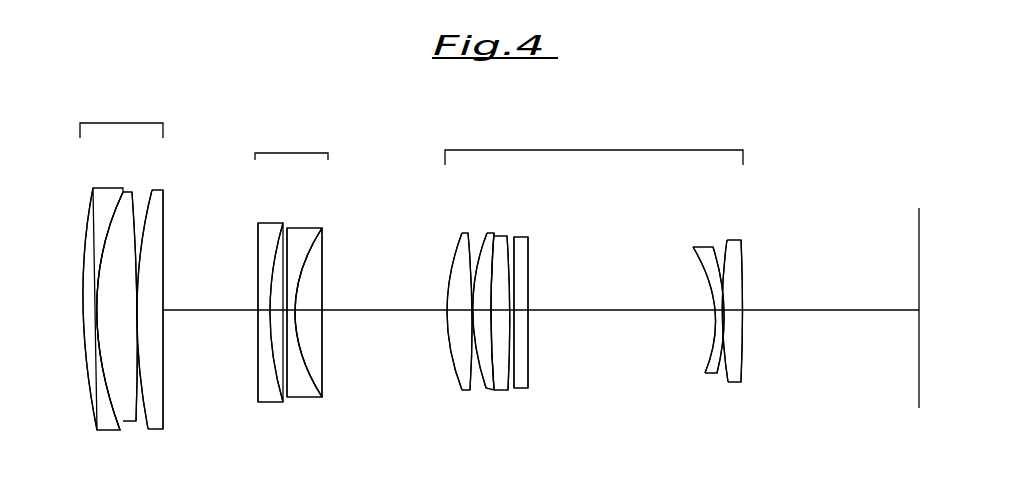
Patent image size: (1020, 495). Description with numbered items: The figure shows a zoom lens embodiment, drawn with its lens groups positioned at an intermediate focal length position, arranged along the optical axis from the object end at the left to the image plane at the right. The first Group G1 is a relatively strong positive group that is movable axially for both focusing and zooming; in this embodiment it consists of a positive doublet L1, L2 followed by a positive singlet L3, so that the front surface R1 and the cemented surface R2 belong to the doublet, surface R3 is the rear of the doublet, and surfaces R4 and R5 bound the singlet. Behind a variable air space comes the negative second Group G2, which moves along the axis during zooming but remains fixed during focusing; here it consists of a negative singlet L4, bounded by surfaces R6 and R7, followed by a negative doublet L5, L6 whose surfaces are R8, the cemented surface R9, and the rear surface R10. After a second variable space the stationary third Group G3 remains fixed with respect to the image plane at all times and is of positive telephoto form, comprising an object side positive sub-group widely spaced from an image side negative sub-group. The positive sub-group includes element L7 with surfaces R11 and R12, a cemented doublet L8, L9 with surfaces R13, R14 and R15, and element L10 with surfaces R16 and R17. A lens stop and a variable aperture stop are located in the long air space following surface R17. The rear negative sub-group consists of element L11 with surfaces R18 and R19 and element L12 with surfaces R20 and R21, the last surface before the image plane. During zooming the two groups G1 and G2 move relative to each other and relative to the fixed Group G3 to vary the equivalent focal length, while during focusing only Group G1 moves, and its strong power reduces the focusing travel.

The first lens group G1 is at (121, 117).
The second lens group G2 is at (291, 142).
The third lens group G3 is at (594, 144).
The lens element L1 is at (98, 207).
The lens element L2 is at (122, 212).
The lens element L3 is at (153, 200).
The lens element L4 is at (265, 232).
The lens element L5 is at (298, 235).
The lens element L6 is at (323, 253).
The lens element L7 is at (457, 252).
The lens element L8 is at (483, 252).
The lens element L9 is at (500, 235).
The lens element L10 is at (523, 262).
The lens element L11 is at (708, 250).
The lens element L12 is at (732, 263).
The lens surface radius R1 is at (95, 420).
The lens surface radius R2 is at (118, 424).
The lens surface radius R3 is at (137, 425).
The lens surface radius R4 is at (147, 428).
The lens surface radius R5 is at (163, 390).
The lens surface radius R6 is at (258, 372).
The lens surface radius R7 is at (278, 375).
The lens surface radius R8 is at (287, 375).
The lens surface radius R9 is at (308, 390).
The lens surface radius R10 is at (322, 375).
The lens surface radius R11 is at (453, 365).
The lens surface radius R12 is at (467, 372).
The lens surface radius R13 is at (478, 382).
The lens surface radius R14 is at (488, 383).
The lens surface radius R15 is at (508, 385).
The lens surface radius R16 is at (520, 362).
The lens surface radius R17 is at (529, 343).
The lens surface radius R18 is at (710, 353).
The lens surface radius R19 is at (715, 368).
The lens surface radius R20 is at (729, 377).
The lens surface radius R21 is at (743, 343).